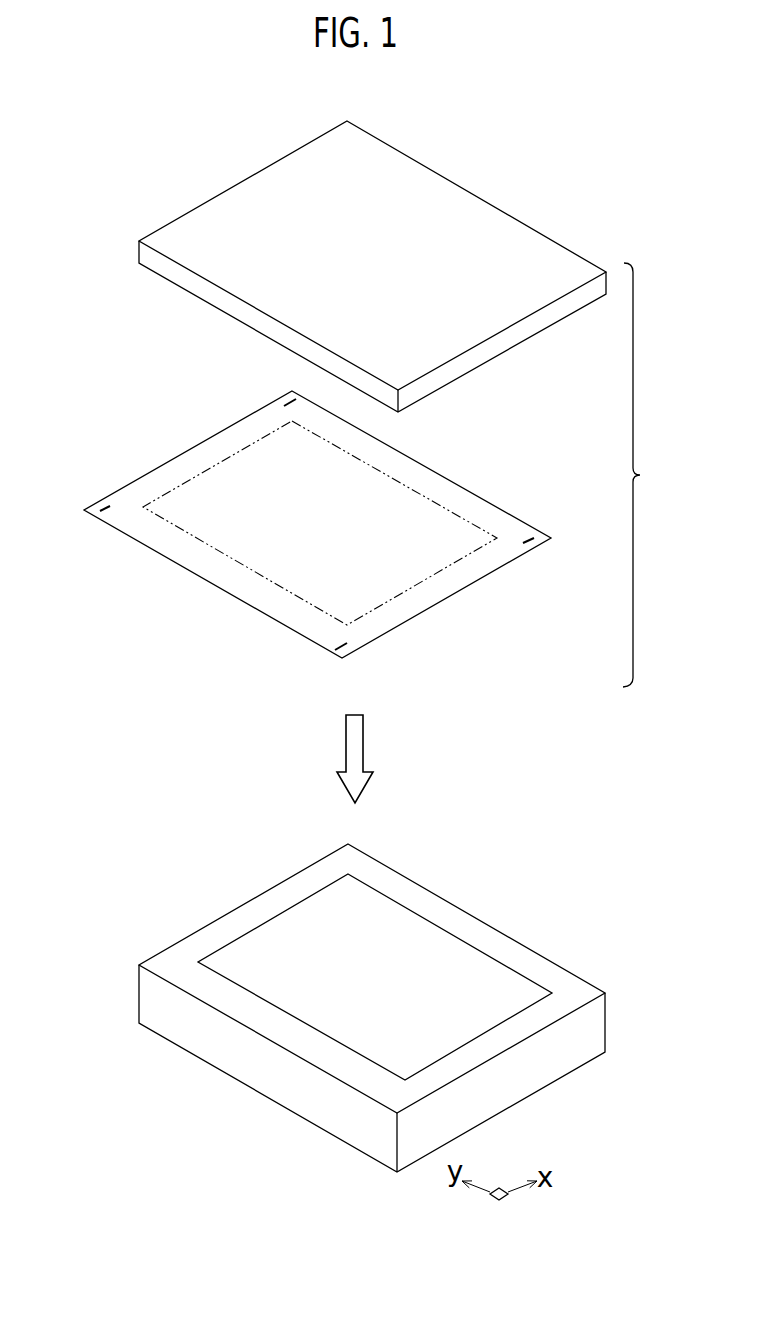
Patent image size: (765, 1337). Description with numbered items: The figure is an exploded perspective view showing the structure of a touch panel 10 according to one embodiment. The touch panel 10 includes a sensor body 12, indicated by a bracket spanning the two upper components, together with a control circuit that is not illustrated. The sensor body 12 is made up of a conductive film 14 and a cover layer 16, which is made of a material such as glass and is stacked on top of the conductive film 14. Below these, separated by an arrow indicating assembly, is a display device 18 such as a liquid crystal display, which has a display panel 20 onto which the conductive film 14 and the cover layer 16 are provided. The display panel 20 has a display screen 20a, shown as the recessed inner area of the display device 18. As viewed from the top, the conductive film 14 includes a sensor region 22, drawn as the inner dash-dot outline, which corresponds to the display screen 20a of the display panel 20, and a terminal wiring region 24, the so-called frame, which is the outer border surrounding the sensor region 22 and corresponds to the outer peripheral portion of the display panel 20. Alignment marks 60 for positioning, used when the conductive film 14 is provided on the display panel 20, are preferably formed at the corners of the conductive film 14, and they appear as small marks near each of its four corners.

The touch panel 10 is at (125, 360).
The sensor body 12 is at (647, 475).
The conductive film 14 is at (525, 520).
The cover layer 16 is at (522, 220).
The display device 18 is at (607, 1021).
The display panel 20 is at (547, 972).
The display screen 20a is at (470, 960).
The sensor region 22 is at (397, 478).
The terminal wiring region 24 is at (450, 498).
The alignment marks 60 is at (527, 543).